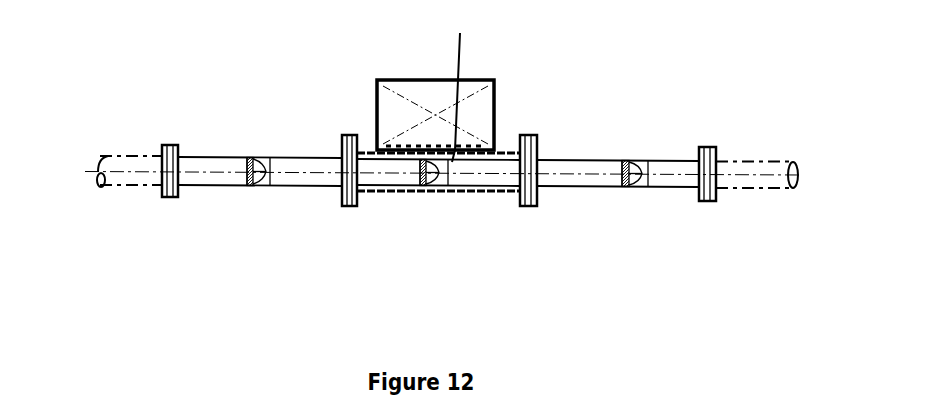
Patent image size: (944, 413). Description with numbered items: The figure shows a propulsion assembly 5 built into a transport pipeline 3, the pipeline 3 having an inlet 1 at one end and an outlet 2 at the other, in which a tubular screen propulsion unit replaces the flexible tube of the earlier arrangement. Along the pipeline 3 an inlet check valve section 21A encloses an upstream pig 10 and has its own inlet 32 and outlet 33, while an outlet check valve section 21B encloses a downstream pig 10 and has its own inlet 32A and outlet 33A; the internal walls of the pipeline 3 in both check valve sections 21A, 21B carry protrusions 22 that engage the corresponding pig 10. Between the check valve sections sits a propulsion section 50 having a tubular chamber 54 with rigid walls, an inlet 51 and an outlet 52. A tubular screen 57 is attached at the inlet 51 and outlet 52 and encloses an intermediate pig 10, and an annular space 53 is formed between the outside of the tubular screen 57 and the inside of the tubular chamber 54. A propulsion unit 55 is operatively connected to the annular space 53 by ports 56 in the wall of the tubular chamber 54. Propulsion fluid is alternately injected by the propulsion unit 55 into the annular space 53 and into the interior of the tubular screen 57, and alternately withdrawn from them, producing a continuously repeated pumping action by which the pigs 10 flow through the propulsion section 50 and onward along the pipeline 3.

The inlet 1 is at (97, 175).
The outlet 2 is at (833, 213).
The transport pipeline 3 is at (456, 218).
The propulsion assembly 5 is at (127, 118).
The pig 10 is at (263, 187).
The inlet check valve section 21A is at (278, 155).
The outlet check valve section 21B is at (667, 160).
The protrusions 22 is at (447, 176).
The inlet 32 is at (180, 168).
The inlet 32A is at (530, 170).
The outlet 33 is at (326, 139).
The outlet 33A is at (718, 165).
The propulsion section 50 is at (440, 146).
The inlet 51 is at (345, 160).
The outlet 52 is at (572, 143).
The annular space 53 is at (382, 197).
The tubular chamber 54 is at (403, 193).
The propulsion unit 55 is at (497, 100).
The ports 56 is at (461, 87).
The tubular screen 57 is at (478, 195).